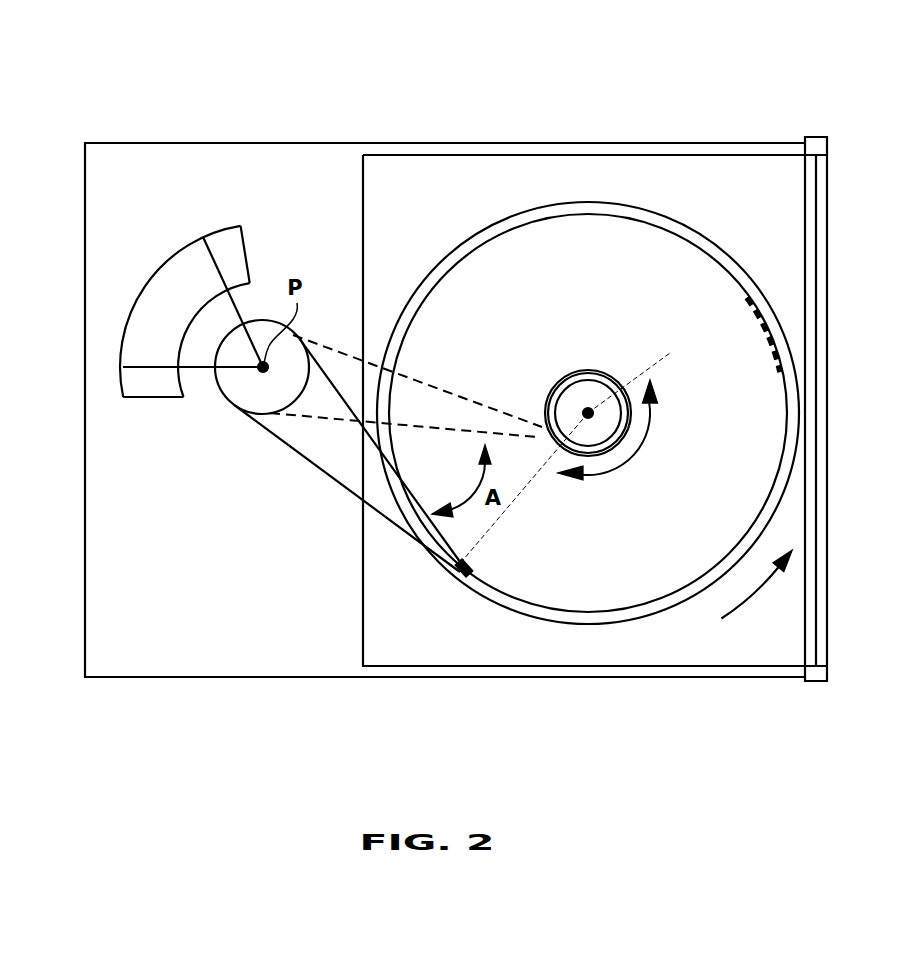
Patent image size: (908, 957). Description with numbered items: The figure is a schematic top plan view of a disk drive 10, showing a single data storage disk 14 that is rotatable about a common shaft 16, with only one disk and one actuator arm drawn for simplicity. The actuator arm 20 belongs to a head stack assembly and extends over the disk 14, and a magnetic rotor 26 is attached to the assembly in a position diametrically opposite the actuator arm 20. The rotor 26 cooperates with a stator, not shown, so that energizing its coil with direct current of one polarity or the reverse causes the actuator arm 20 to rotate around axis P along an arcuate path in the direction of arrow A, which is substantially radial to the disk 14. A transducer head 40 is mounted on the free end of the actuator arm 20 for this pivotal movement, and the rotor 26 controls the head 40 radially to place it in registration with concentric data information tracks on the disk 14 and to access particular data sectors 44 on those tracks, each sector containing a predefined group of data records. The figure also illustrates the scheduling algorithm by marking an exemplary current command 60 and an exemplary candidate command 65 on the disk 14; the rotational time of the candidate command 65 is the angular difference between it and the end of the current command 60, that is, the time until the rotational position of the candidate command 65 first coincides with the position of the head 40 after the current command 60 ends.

The disk drive 10 is at (438, 42).
The data storage disk 14 is at (684, 272).
The common shaft 16 is at (584, 408).
The actuator arm 20 is at (318, 442).
The magnetic rotor 26 is at (181, 263).
The transducer head 40 is at (545, 430).
The data sector 44 is at (750, 302).
The current command 60 is at (477, 568).
The candidate command 65 is at (618, 386).